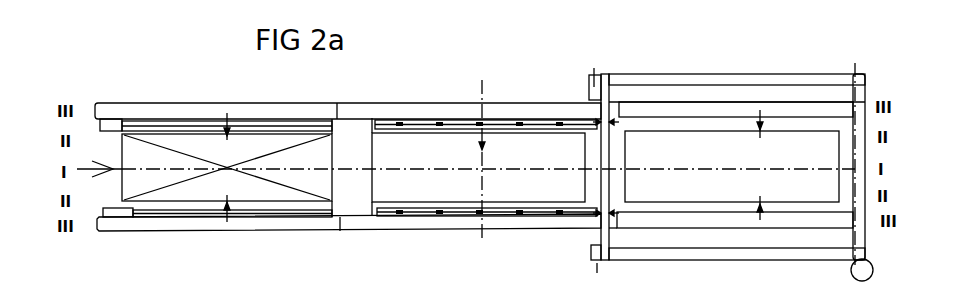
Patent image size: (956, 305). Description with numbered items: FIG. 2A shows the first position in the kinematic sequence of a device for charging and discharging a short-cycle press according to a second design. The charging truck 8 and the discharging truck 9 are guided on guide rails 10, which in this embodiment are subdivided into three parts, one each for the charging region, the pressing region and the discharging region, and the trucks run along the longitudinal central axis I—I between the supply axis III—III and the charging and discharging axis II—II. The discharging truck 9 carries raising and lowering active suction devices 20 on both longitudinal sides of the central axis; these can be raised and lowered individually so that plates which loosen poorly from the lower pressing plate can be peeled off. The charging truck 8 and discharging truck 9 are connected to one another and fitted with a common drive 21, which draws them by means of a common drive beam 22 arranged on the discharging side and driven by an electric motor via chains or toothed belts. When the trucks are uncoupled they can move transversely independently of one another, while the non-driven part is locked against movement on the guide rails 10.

The charging truck 8 is at (132, 128).
The discharging truck 9 is at (547, 122).
The guide rails 10 is at (228, 122).
The active suction devices 20 is at (520, 123).
The common drive 21 is at (851, 272).
The drive beam 22 is at (604, 85).